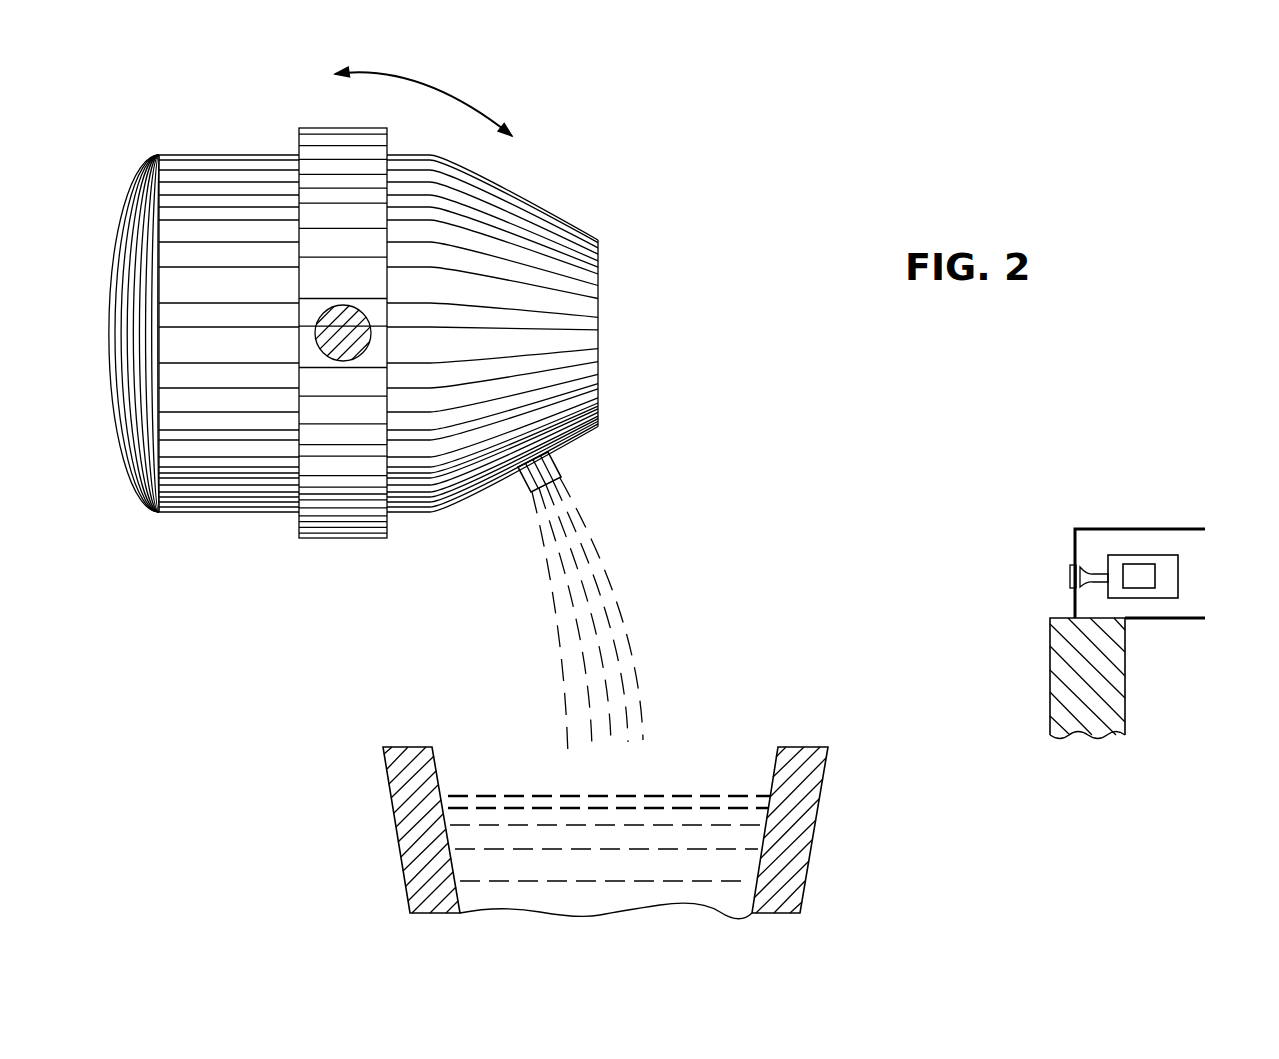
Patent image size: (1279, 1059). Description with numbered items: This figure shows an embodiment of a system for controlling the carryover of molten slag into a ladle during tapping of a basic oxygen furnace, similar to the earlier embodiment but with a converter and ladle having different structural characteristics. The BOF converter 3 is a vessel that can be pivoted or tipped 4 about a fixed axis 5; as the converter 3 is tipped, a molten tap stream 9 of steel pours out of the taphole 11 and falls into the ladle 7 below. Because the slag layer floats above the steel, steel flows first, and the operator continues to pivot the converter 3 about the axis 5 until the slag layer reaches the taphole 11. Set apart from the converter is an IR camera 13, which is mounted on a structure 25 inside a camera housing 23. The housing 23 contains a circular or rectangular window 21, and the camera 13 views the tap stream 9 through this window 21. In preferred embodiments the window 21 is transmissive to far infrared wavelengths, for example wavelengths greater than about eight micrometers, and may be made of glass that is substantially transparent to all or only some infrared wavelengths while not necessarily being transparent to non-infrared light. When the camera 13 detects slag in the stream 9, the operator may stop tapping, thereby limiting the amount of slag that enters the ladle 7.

The BOF converter 3 is at (243, 463).
The pivoting or tipping motion 4 is at (463, 98).
The axis 5 is at (333, 328).
The ladle 7 is at (393, 797).
The molten tap stream 9 is at (585, 672).
The taphole 11 is at (548, 468).
The IR camera 13 is at (1163, 574).
The window 21 is at (1068, 574).
The camera housing 23 is at (1150, 525).
The structure 25 is at (1122, 682).